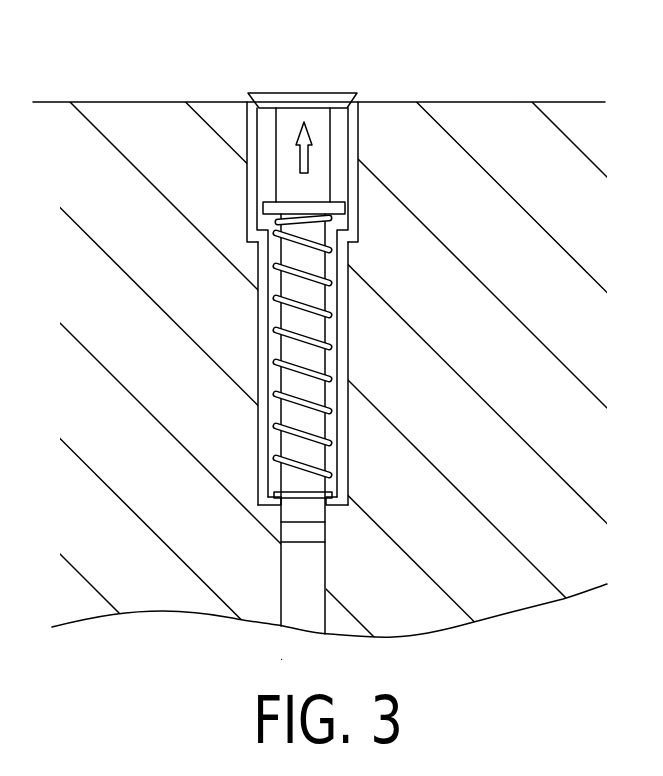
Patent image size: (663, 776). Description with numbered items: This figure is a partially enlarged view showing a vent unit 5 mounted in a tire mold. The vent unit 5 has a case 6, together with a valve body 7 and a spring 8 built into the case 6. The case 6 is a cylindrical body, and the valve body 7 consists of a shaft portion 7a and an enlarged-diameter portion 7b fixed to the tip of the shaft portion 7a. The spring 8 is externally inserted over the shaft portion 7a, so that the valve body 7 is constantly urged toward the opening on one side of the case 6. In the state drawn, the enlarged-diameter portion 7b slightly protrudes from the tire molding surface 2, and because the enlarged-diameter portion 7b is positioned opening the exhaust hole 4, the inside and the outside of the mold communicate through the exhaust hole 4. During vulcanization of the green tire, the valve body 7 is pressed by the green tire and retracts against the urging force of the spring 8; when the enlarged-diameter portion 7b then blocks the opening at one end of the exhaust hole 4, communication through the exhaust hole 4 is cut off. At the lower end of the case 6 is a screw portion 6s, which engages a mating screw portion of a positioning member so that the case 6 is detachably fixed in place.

The tire molding surface 2 is at (490, 102).
The exhaust hole 4 is at (262, 432).
The vent unit 5 is at (241, 127).
The case 6 is at (255, 331).
The screw portion 6s is at (283, 512).
The valve body 7 is at (331, 252).
The shaft portion 7a is at (313, 332).
The enlarged-diameter portion 7b is at (298, 100).
The spring 8 is at (327, 399).